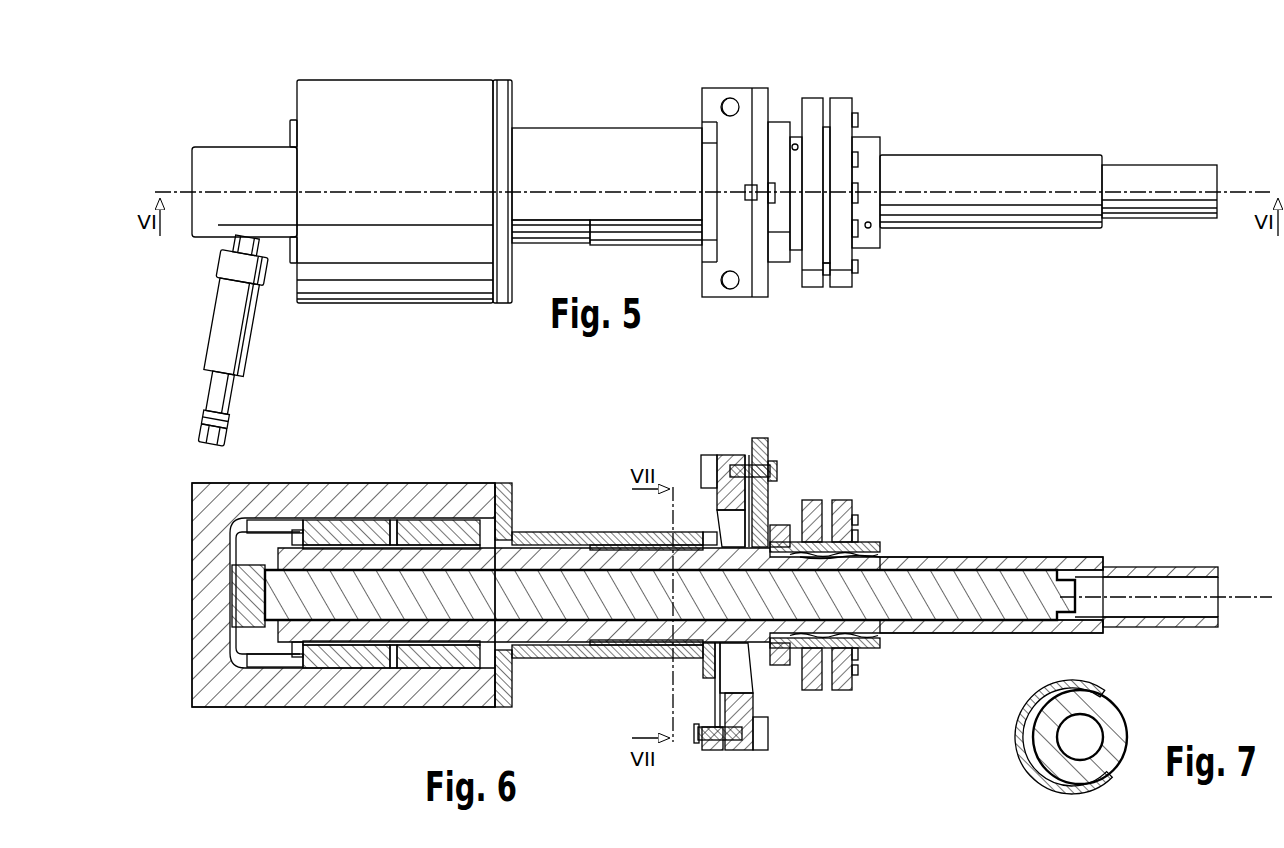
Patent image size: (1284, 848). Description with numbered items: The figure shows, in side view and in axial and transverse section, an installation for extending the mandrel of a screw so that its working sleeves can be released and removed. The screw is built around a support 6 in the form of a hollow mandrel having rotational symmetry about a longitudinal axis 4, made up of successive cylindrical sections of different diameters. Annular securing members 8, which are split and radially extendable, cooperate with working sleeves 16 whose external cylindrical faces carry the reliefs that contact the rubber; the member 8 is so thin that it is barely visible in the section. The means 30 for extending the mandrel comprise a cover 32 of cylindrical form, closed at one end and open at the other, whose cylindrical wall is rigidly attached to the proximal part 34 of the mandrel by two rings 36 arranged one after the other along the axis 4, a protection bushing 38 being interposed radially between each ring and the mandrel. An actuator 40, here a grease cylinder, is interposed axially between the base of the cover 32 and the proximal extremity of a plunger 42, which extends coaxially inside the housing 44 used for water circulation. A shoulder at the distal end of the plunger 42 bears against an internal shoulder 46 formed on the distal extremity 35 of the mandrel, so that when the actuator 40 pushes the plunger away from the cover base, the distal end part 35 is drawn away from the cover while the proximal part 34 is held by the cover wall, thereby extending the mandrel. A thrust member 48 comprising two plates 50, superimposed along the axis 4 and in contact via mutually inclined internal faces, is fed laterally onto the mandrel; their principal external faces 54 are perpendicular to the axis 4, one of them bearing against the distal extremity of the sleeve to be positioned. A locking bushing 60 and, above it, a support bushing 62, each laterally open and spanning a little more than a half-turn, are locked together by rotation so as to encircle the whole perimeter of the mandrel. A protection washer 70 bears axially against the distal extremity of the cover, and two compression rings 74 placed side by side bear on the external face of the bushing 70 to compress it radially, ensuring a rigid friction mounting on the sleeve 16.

In FIG. 5, the longitudinal axis 4 is at (1258, 190).
In FIG. 6, the longitudinal axis 4 is at (1264, 592).
In FIG. 5, the support 6 is at (1172, 175).
In FIG. 6, the support 6 is at (1183, 567).
In FIG. 6, the annular securing member 8 is at (812, 560).
In FIG. 6, the working sleeve 16 is at (883, 545).
In FIG. 5, the means for extending the mandrel 30 is at (410, 100).
In FIG. 6, the means for extending the mandrel 30 is at (417, 483).
In FIG. 5, the cover 32 is at (357, 98).
In FIG. 6, the cover 32 is at (320, 492).
In FIG. 6, the proximal part of the mandrel 34 is at (432, 552).
In FIG. 6, the distal extremity of the mandrel 35 is at (1020, 557).
In FIG. 6, the ring 36 is at (345, 528).
In FIG. 6, the protection bushing 38 is at (380, 668).
In FIG. 5, the actuator 40 is at (228, 330).
In FIG. 6, the actuator 40 is at (240, 604).
In FIG. 6, the plunger 42 is at (588, 580).
In FIG. 6, the housing 44 is at (1103, 592).
In FIG. 6, the internal shoulder 46 is at (1052, 612).
In FIG. 5, the thrust member 48 is at (728, 92).
In FIG. 6, the thrust member 48 is at (743, 437).
In FIG. 6, the plate 50 is at (700, 680).
In FIG. 6, the principal external face 54 is at (700, 673).
In FIG. 6, the locking bushing 60 is at (610, 660).
In FIG. 5, the support bushing 62 is at (607, 148).
In FIG. 6, the support bushing 62 is at (565, 658).
In FIG. 5, the protection washer 70 is at (778, 130).
In FIG. 6, the protection washer 70 is at (780, 525).
In FIG. 5, the compression ring 74 is at (812, 103).
In FIG. 6, the compression ring 74 is at (840, 505).